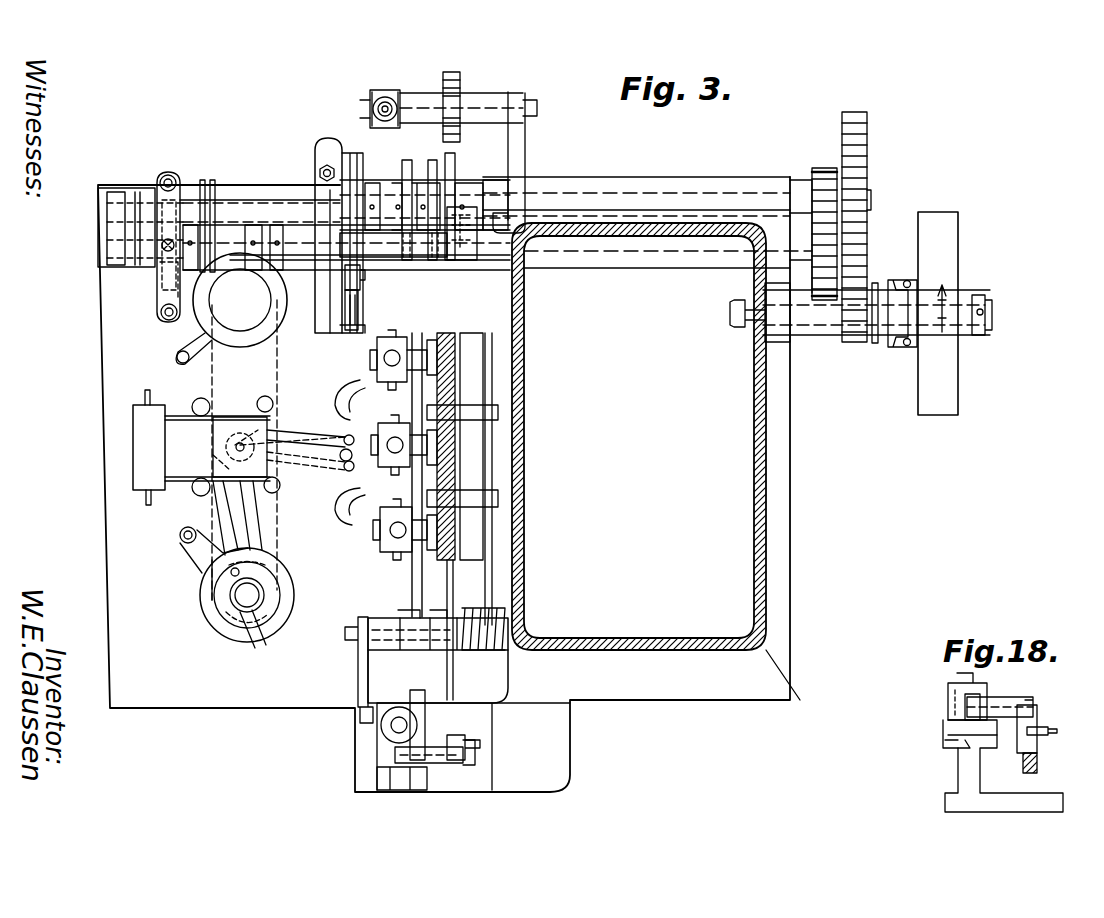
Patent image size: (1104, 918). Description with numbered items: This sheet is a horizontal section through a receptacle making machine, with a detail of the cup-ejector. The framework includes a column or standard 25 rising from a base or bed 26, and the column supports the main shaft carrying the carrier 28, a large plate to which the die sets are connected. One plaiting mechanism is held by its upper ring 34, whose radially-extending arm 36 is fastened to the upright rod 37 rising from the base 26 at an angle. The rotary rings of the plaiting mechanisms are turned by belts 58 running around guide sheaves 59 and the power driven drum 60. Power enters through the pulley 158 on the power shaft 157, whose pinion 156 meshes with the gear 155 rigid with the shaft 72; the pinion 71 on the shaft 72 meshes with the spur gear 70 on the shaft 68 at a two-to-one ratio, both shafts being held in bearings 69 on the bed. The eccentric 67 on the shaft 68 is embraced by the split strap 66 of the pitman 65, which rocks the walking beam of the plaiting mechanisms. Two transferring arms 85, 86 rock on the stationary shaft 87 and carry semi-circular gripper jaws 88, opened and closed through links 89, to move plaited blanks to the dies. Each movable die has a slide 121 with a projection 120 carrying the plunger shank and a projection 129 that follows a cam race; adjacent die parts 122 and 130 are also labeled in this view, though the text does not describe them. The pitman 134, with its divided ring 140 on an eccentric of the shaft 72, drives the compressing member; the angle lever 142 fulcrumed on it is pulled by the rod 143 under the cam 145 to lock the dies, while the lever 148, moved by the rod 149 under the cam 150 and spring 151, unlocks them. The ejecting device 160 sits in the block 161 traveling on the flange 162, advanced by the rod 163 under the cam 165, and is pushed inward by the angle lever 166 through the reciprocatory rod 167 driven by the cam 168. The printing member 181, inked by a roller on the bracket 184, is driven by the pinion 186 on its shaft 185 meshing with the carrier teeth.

In FIG. 3, the column 25 is at (650, 636).
In FIG. 3, the base 26 is at (449, 484).
In FIG. 3, the carrier 28 is at (457, 527).
In FIG. 3, the upper ring 34 is at (213, 620).
In FIG. 3, the radially-extending arm 36 is at (200, 557).
In FIG. 3, the upright rod 37 is at (180, 540).
In FIG. 3, the belt 58 is at (172, 420).
In FIG. 3, the guide sheave 59 is at (265, 400).
In FIG. 3, the power driven drum 60 is at (127, 458).
In FIG. 3, the pitman 65 is at (160, 248).
In FIG. 3, the split strap 66 is at (162, 292).
In FIG. 3, the eccentric 67 is at (168, 272).
In FIG. 3, the shaft 68 is at (585, 255).
In FIG. 3, the bearing 69 is at (140, 212).
In FIG. 3, the spur gear 70 is at (827, 300).
In FIG. 3, the pinion 71 is at (818, 165).
In FIG. 3, the shaft 72 is at (603, 192).
In FIG. 3, the transferring arm 85 is at (285, 442).
In FIG. 3, the transferring arm 86 is at (247, 513).
In FIG. 3, the stationary shaft 87 is at (267, 420).
In FIG. 3, the gripper jaw 88 is at (353, 393).
In FIG. 3, the link 89 is at (290, 460).
In FIG. 3, the projection 120 is at (435, 350).
In FIG. 3, the slide 121 is at (437, 377).
In FIG. 3, the slide 122 is at (433, 360).
In FIG. 3, the projection 129 is at (494, 497).
In FIG. 3, the bar 130 is at (470, 520).
In FIG. 3, the pitman 134 is at (323, 305).
In FIG. 3, the divided ring 140 is at (323, 153).
In FIG. 3, the angle lever 142 is at (358, 293).
In FIG. 3, the rod 143 is at (350, 310).
In FIG. 3, the cam 145 is at (357, 153).
In FIG. 3, the lever 148 is at (358, 663).
In FIG. 3, the rod 149 is at (420, 582).
In FIG. 3, the cam 150 is at (406, 160).
In FIG. 3, the spring 151 is at (502, 625).
In FIG. 3, the gear 155 is at (857, 146).
In FIG. 3, the pinion 156 is at (858, 343).
In FIG. 3, the power shaft 157 is at (990, 313).
In FIG. 3, the pulley 158 is at (940, 402).
In FIG. 3, the ejecting device 160 is at (381, 733).
In FIG. 18, the ejecting device 160 is at (965, 672).
In FIG. 3, the block 161 is at (377, 755).
In FIG. 18, the block 161 is at (943, 738).
In FIG. 3, the flange 162 is at (390, 790).
In FIG. 18, the flange 162 is at (948, 725).
In FIG. 3, the rod 163 is at (450, 663).
In FIG. 18, the rod 163 is at (1020, 752).
In FIG. 3, the cam 165 is at (432, 158).
In FIG. 18, the angle lever 166 is at (1035, 720).
In FIG. 3, the reciprocatory rod 167 is at (465, 722).
In FIG. 18, the reciprocatory rod 167 is at (1032, 765).
In FIG. 3, the cam 168 is at (455, 165).
In FIG. 3, the printing member 181 is at (383, 92).
In FIG. 3, the bracket 184 is at (525, 160).
In FIG. 3, the shaft 185 is at (480, 105).
In FIG. 3, the pinion 186 is at (452, 75).